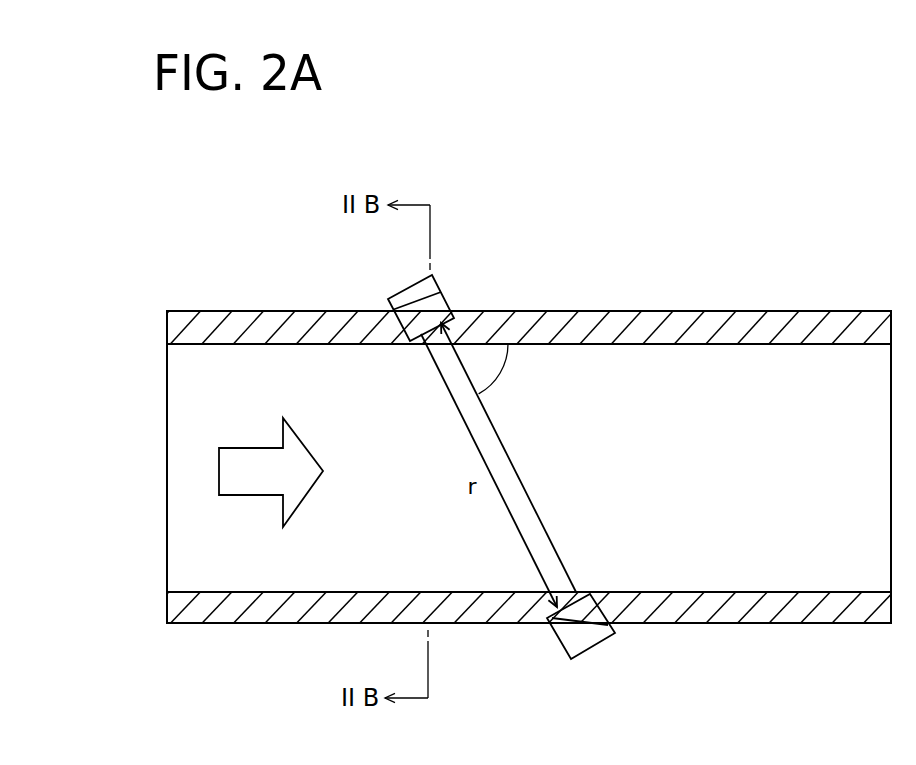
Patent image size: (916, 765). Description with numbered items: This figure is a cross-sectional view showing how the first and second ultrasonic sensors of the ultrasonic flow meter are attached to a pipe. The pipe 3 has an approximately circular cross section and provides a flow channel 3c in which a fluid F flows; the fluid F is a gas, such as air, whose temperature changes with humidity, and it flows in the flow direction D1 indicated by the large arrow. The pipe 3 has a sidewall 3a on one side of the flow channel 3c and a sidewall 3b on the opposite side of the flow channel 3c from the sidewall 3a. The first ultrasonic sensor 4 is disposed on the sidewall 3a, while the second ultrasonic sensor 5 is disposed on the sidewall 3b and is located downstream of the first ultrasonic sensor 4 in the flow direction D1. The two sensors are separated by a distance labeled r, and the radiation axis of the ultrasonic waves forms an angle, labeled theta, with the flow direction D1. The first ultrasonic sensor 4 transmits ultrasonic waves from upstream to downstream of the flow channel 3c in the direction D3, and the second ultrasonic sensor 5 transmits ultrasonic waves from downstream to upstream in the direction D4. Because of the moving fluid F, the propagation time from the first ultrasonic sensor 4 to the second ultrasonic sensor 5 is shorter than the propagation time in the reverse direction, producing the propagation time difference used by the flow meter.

The pipe 3 is at (516, 467).
The sidewall 3a is at (250, 311).
The sidewall 3b is at (263, 624).
The flow channel 3c is at (822, 542).
The first ultrasonic sensor 4 is at (440, 288).
The second ultrasonic sensor 5 is at (588, 648).
The flow direction D1 is at (271, 472).
The ultrasonic transmission direction from first sensor D3 is at (466, 425).
The ultrasonic transmission direction from second sensor D4 is at (536, 508).
The fluid F is at (666, 470).